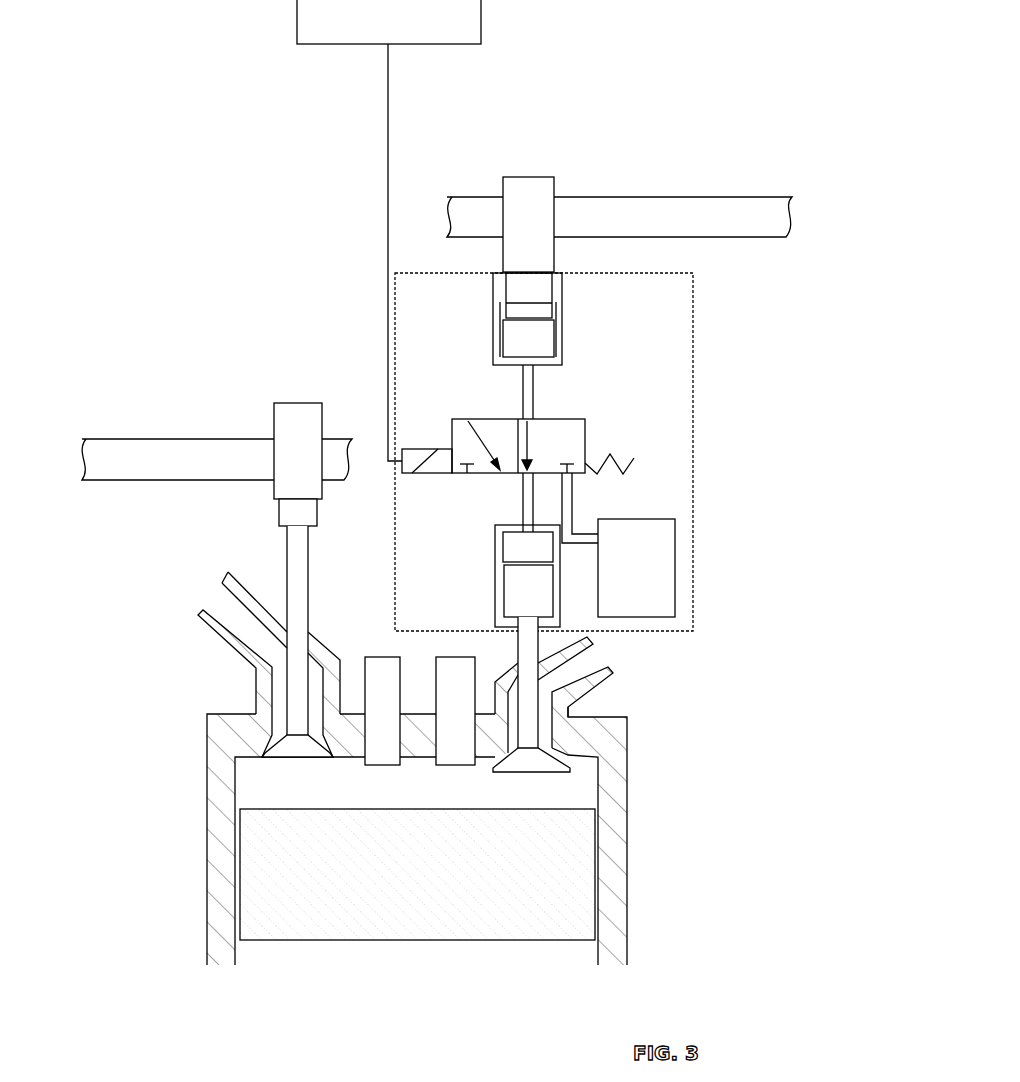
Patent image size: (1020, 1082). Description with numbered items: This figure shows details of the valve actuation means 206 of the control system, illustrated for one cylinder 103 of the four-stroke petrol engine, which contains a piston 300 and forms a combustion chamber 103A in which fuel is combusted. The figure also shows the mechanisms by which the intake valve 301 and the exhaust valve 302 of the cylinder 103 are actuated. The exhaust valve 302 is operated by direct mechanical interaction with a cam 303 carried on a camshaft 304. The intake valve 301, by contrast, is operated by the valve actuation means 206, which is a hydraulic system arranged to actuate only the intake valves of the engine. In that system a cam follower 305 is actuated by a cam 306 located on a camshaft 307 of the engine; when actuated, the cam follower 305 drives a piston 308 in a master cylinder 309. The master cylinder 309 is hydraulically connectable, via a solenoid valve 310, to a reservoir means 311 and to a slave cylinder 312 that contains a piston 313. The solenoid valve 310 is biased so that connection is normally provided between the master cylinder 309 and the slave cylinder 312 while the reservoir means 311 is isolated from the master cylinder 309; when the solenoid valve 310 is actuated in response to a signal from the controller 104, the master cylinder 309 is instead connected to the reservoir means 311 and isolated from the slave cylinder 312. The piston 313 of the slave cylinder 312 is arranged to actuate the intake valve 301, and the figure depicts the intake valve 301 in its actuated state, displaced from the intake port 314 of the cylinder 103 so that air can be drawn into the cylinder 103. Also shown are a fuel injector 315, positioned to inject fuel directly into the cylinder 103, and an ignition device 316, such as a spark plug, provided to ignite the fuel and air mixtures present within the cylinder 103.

The controller 104 is at (365, 25).
The valve actuation means 206 is at (614, 417).
The cam 306 is at (523, 210).
The camshaft 307 is at (594, 213).
The master cylinder 309 is at (562, 352).
The cam follower 305 is at (513, 303).
The piston 308 is at (513, 348).
The solenoid valve 310 is at (565, 437).
The reservoir means 311 is at (621, 577).
The slave cylinder 312 is at (511, 557).
The piston 313 is at (511, 595).
The cylinder 103 is at (577, 798).
The combustion chamber 103A is at (500, 799).
The exhaust valve 302 is at (298, 752).
The intake port 314 is at (558, 673).
The camshaft 304 is at (157, 460).
The cam 303 is at (297, 427).
The intake valve 301 is at (532, 752).
The ignition device 316 is at (379, 747).
The fuel injector 315 is at (450, 752).
The piston 300 is at (389, 889).